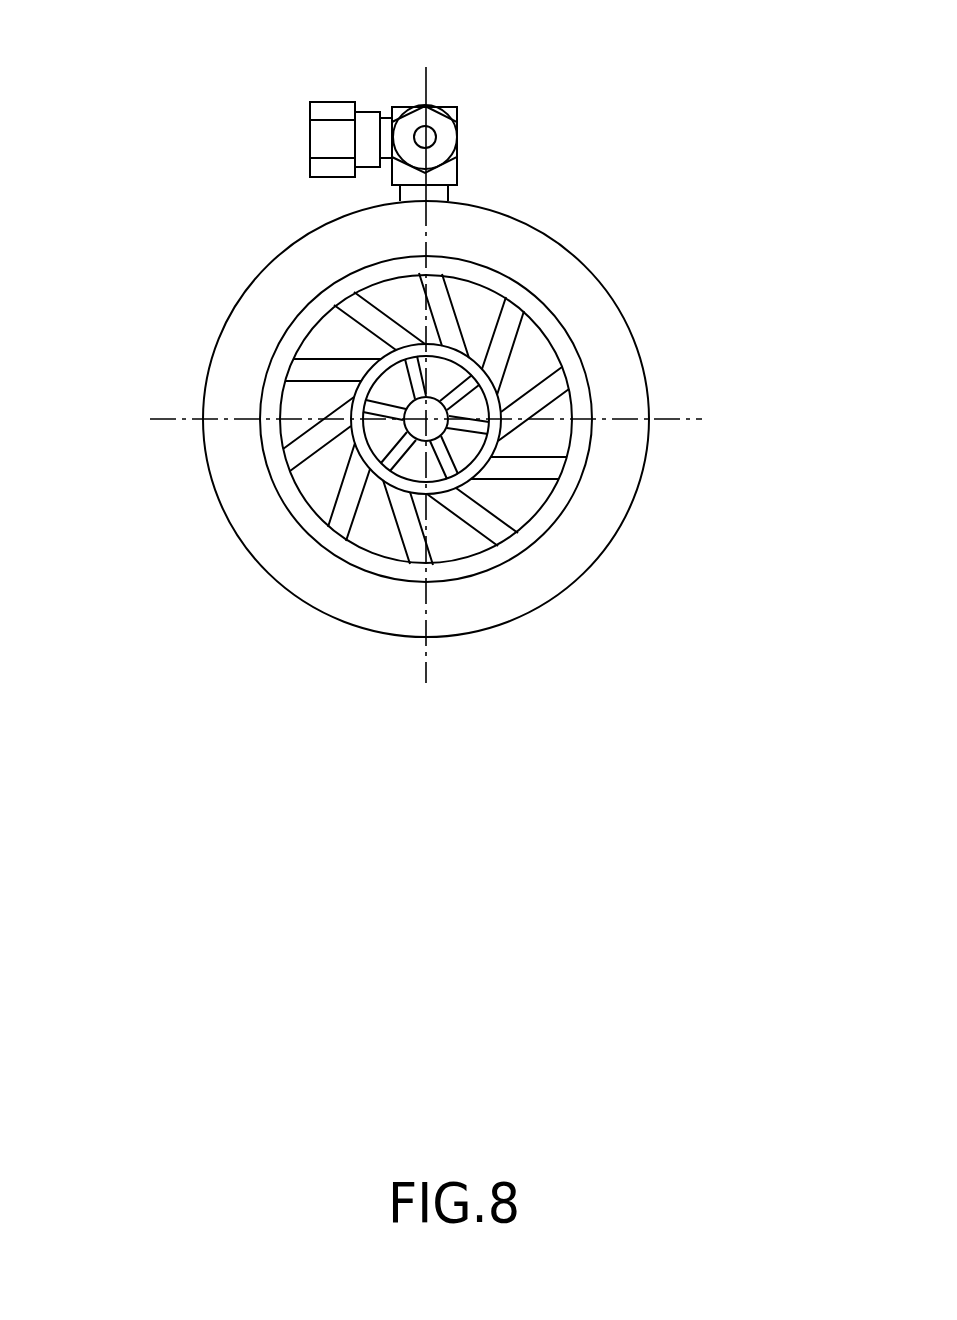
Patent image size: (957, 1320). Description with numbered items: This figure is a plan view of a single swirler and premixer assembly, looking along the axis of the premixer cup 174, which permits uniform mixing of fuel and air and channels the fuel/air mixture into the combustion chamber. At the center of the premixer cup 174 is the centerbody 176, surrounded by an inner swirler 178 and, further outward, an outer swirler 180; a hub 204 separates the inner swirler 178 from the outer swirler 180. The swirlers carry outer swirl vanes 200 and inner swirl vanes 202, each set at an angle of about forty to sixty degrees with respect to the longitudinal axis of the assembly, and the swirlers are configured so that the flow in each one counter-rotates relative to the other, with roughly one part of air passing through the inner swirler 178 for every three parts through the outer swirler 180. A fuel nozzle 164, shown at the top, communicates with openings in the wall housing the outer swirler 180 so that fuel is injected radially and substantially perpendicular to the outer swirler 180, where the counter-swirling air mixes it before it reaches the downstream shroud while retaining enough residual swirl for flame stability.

The fuel nozzle 164 is at (443, 108).
The premixer cup 174 is at (647, 362).
The centerbody 176 is at (500, 427).
The inner swirler 178 is at (533, 517).
The outer swirler 180 is at (327, 523).
The outer swirl vanes 200 is at (382, 477).
The inner swirl vanes 202 is at (483, 372).
The hub 204 is at (307, 505).